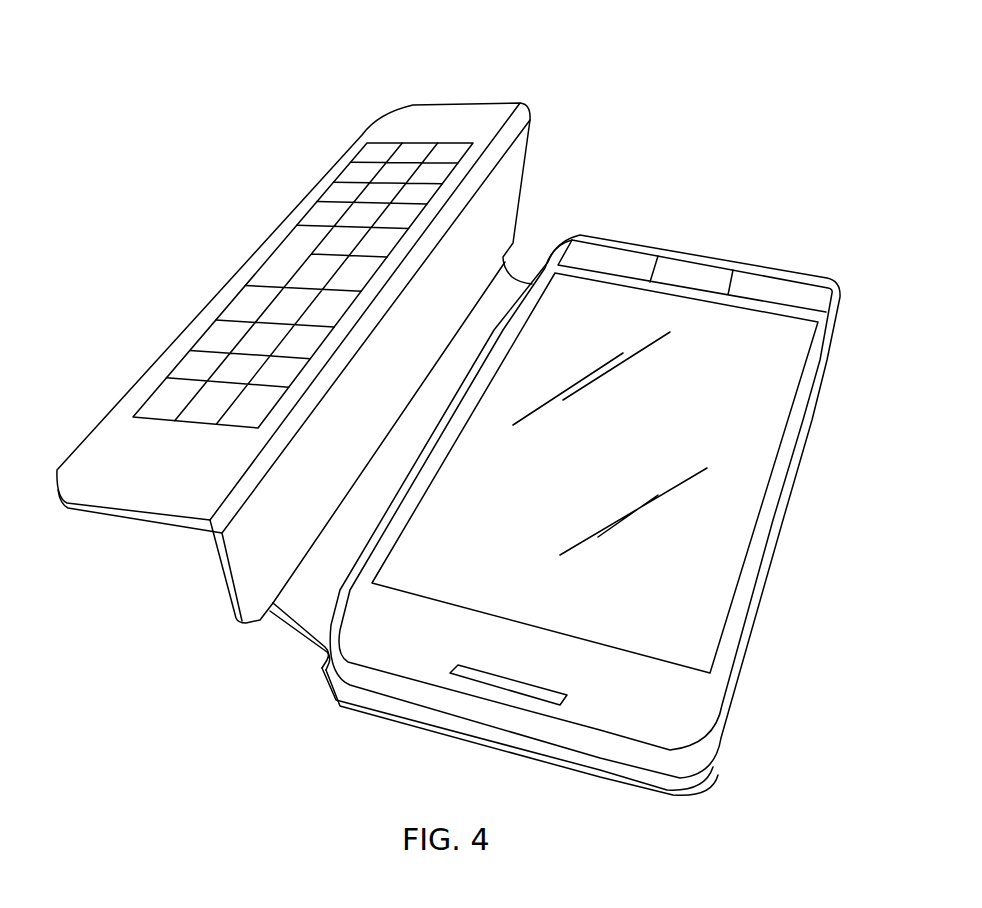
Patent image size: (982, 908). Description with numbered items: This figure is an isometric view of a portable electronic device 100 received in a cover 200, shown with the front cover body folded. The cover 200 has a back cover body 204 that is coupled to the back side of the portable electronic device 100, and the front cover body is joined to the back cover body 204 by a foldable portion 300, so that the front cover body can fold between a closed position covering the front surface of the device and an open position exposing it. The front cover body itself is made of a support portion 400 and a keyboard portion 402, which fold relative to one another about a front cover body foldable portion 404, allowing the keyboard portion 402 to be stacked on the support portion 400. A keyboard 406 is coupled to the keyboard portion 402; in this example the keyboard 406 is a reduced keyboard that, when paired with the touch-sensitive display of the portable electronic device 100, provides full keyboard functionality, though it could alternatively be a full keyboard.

The portable electronic device 100 is at (682, 620).
The cover 200 is at (227, 587).
The back cover body 204 is at (582, 772).
The foldable portion 300 is at (302, 613).
The support portion 400 is at (253, 593).
The keyboard portion 402 is at (453, 120).
The front cover body foldable portion 404 is at (530, 112).
The keyboard 406 is at (320, 200).